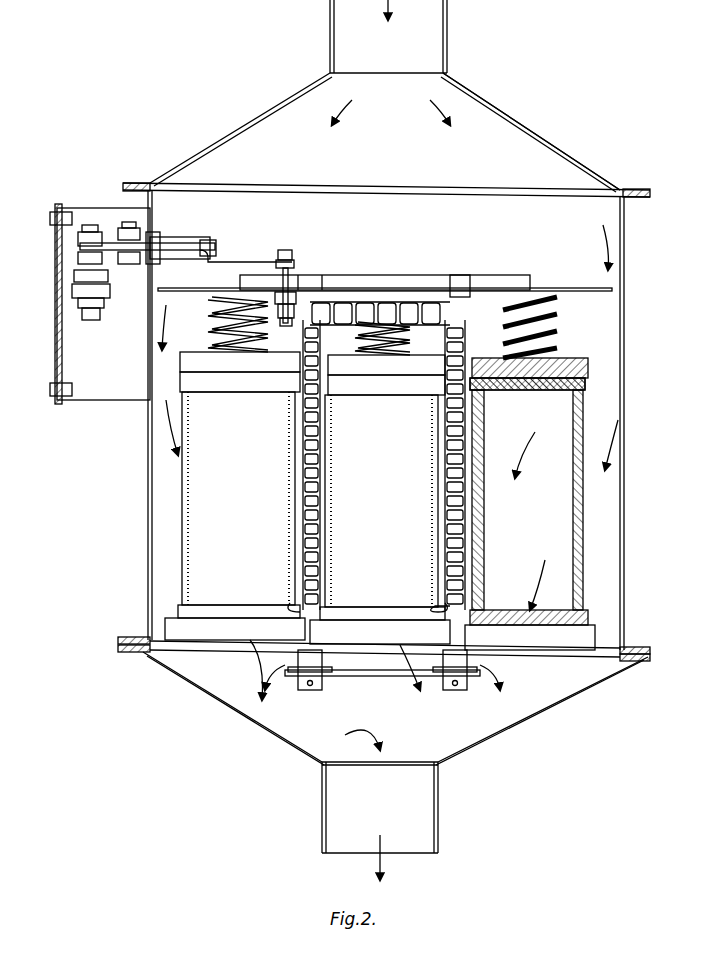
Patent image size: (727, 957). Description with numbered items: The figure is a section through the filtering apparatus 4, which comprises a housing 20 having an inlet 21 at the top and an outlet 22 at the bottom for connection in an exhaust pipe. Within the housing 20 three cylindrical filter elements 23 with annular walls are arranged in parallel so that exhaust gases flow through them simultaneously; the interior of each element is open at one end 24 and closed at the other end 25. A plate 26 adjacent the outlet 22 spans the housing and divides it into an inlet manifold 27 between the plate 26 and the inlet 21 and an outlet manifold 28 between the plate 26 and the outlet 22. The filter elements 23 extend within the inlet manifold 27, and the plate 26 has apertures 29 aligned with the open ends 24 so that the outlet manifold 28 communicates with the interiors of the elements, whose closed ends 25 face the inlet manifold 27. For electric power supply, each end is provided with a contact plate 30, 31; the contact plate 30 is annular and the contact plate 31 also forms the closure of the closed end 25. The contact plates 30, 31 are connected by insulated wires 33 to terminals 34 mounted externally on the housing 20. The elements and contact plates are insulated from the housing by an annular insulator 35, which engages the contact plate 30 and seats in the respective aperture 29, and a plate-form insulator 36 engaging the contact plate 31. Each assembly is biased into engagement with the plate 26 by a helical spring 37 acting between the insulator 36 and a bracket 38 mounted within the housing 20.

The filtering apparatus 4 is at (522, 110).
The housing 20 is at (565, 147).
The inlet 21 is at (447, 28).
The outlet 22 is at (438, 800).
The filter elements 23 is at (192, 480).
The open end 24 is at (560, 610).
The closed end 25 is at (560, 390).
The plate 26 is at (165, 650).
The inlet manifold 27 is at (394, 154).
The outlet manifold 28 is at (300, 735).
The apertures 29 is at (203, 655).
The contact plate 30 is at (192, 606).
The contact plate 31 is at (192, 383).
The insulated wires 33 is at (225, 262).
The terminals 34 is at (100, 285).
The insulator 35 is at (188, 628).
The insulator 36 is at (182, 360).
The helical spring 37 is at (212, 322).
The bracket 38 is at (548, 288).